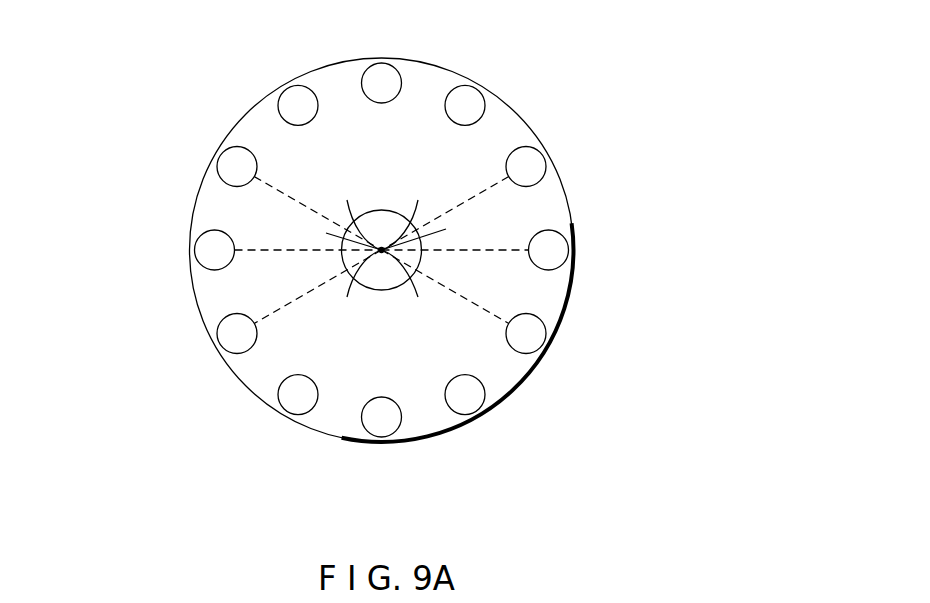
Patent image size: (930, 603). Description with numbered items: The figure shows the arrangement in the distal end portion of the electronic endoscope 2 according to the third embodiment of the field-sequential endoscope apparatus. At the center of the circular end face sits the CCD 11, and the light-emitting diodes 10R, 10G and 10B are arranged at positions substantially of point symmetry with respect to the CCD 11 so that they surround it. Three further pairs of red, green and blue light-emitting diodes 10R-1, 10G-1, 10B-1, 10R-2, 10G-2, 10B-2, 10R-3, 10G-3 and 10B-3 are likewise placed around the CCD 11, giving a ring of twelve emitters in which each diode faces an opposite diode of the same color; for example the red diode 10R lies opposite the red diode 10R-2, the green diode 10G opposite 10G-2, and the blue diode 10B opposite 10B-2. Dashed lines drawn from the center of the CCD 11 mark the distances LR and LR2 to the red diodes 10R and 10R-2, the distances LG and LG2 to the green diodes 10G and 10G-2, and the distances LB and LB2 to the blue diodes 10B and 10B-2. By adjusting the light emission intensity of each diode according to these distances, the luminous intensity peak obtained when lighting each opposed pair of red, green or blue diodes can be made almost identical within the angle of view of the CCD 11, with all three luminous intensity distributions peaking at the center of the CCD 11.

The electronic endoscope 2 is at (517, 112).
The CCD 11 is at (341, 258).
The red light-emitting diode 10R-1 is at (382, 63).
The blue light-emitting diode 10B-1 is at (288, 88).
The green light-emitting diode 10G-1 is at (476, 88).
The green light-emitting diode 10G-2 is at (216, 158).
The blue light-emitting diode 10B is at (544, 159).
The red light-emitting diode 10R-2 is at (194, 250).
The red light-emitting diode 10R is at (568, 250).
The blue light-emitting diode 10B-2 is at (218, 341).
The green light-emitting diode 10G is at (544, 342).
The green light-emitting diode 10G-3 is at (288, 412).
The red light-emitting diode 10R-3 is at (382, 437).
The blue light-emitting diode 10B-3 is at (476, 413).
The distance LG2 is at (255, 175).
The distance LG is at (507, 325).
The distance LB is at (507, 175).
The distance LB2 is at (255, 325).
The distance LR2 is at (234, 250).
The distance LR is at (528, 250).